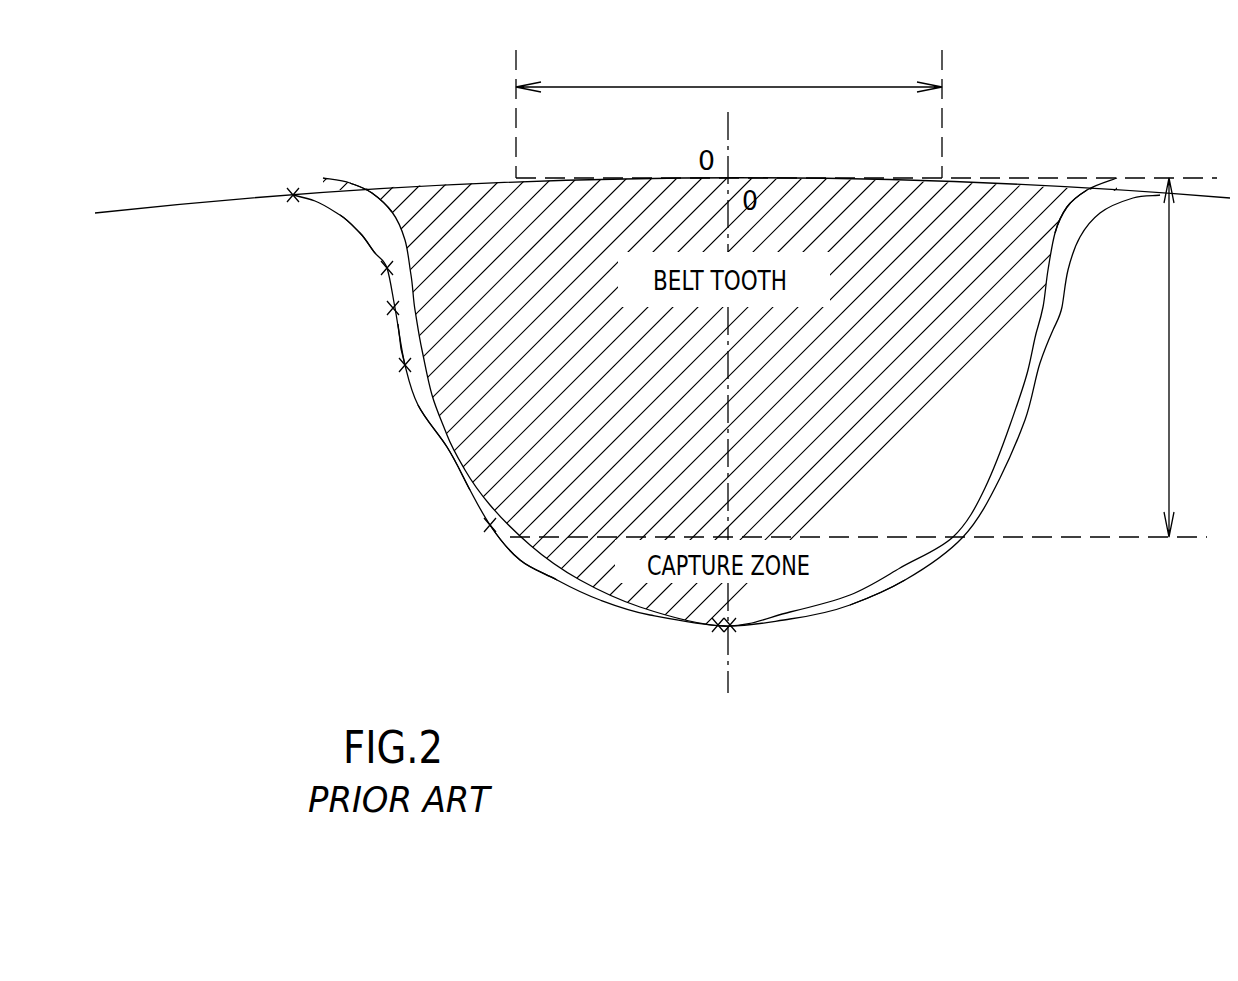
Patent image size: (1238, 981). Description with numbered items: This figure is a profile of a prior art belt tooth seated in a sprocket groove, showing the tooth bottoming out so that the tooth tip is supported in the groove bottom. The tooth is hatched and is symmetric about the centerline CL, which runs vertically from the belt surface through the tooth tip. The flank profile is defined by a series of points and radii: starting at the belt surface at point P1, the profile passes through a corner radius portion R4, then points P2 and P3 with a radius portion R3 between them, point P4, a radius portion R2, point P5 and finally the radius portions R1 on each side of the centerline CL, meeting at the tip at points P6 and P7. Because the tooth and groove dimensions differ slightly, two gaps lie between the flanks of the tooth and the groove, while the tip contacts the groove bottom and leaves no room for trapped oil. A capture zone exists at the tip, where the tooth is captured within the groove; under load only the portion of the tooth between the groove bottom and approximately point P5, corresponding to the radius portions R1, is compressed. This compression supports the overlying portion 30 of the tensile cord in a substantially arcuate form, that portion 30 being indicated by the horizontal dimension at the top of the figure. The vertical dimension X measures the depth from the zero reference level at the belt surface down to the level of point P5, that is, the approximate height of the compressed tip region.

The portion of tensile cord 30 is at (678, 83).
The distance x X is at (1171, 357).
The centerline CL is at (738, 423).
The point P1 is at (293, 195).
The point P2 is at (387, 268).
The point P3 is at (393, 308).
The point P4 is at (405, 365).
The point P5 is at (490, 525).
The point P6 is at (718, 625).
The point P7 is at (730, 625).
The radius portion R1 is at (530, 557).
The radius portion R2 is at (443, 440).
The radius portion R3 is at (410, 340).
The radius portion R4 is at (367, 225).